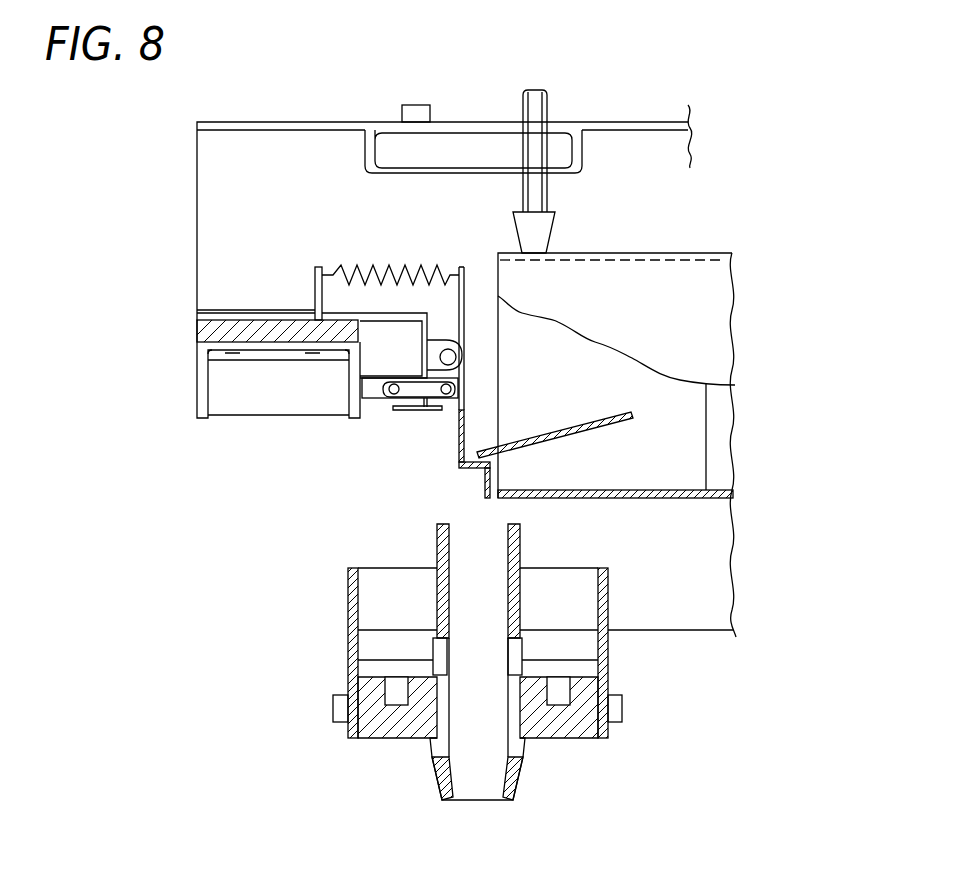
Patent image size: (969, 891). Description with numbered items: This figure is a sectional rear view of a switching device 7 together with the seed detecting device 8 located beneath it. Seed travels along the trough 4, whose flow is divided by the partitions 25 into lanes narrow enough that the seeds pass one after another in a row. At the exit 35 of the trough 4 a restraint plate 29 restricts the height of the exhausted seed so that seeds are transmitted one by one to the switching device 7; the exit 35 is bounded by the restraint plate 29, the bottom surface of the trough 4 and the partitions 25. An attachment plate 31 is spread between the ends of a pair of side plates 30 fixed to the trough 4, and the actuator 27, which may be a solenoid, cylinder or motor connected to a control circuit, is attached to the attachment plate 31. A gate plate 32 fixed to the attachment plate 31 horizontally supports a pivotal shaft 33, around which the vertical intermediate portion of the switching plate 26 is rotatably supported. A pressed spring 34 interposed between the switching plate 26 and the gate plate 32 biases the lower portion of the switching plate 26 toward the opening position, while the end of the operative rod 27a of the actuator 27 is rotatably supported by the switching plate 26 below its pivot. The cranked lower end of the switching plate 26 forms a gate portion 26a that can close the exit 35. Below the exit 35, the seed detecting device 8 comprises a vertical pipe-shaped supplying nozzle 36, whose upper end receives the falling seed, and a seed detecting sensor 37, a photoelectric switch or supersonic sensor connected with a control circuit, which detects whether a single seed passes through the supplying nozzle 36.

The side plate 30 is at (212, 198).
The pressed spring 34 is at (392, 270).
The gate plate 32 is at (333, 310).
The attachment plate 31 is at (207, 330).
The actuator 27 is at (252, 405).
The operative rod 27a is at (372, 388).
The pivotal shaft 33 is at (458, 352).
The switching plate 26 is at (472, 408).
The gate portion 26a is at (482, 490).
The partition 25 is at (724, 430).
The restraint plate 29 is at (582, 425).
The trough 4 is at (680, 500).
The exit 35 is at (552, 463).
The switching device 7 is at (256, 541).
The seed detecting sensor 37 is at (604, 668).
The supplying nozzle 36 is at (513, 795).
The seed detecting device 8 is at (702, 684).